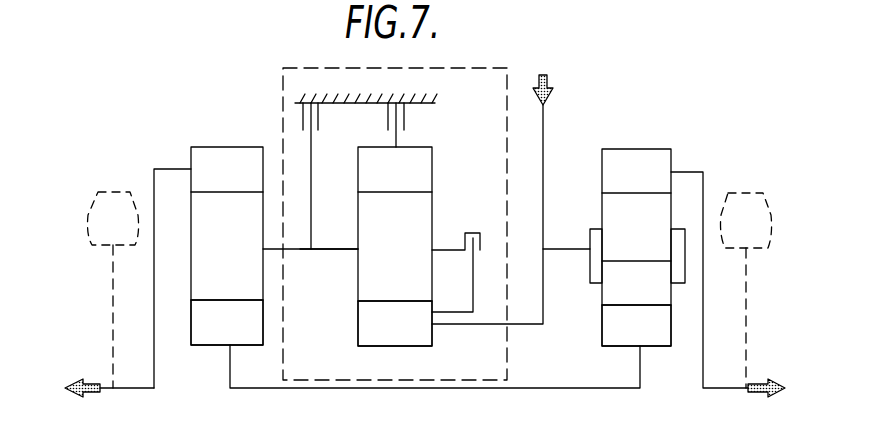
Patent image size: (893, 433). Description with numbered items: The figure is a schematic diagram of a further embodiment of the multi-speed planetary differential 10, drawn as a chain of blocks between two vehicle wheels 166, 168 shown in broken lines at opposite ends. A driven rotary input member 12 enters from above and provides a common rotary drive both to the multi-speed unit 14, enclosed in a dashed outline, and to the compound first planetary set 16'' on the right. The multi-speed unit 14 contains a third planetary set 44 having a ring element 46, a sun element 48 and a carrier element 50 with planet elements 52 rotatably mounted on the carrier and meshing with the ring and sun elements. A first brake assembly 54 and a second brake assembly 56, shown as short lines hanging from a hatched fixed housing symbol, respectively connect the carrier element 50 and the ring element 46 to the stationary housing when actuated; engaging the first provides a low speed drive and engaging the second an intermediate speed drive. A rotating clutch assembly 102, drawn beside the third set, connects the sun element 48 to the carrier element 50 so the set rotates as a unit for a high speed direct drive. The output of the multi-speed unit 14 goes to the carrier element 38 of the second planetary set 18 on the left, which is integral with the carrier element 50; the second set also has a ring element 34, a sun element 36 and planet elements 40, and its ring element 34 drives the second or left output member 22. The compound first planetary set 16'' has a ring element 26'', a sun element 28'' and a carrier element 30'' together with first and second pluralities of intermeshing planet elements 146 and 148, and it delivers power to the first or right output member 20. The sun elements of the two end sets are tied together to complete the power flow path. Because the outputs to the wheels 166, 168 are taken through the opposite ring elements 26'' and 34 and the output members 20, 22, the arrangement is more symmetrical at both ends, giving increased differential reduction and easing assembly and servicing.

The multi-speed planetary differential 10 is at (128, 100).
The driven rotary input member 12 is at (545, 120).
The multi-speed unit 14 is at (473, 67).
The compound first planetary set 16'' is at (619, 223).
The second planetary set 18 is at (227, 220).
The first output member 20 is at (722, 387).
The second output member 22 is at (105, 386).
The ring element 26'' is at (636, 177).
The sun element 28'' is at (636, 325).
The carrier element 30'' is at (617, 230).
The ring element 34 is at (237, 181).
The sun element 36 is at (237, 336).
The carrier element 38 is at (263, 247).
The planet elements 40 is at (237, 271).
The third planetary set 44 is at (361, 255).
The ring element 46 is at (408, 180).
The sun element 48 is at (408, 336).
The carrier element 50 is at (335, 249).
The planet elements 52 is at (408, 271).
The first brake assembly 54 is at (303, 118).
The second brake assembly 56 is at (405, 121).
The rotating clutch assembly 102 is at (472, 229).
The first plurality of planet elements 146 is at (656, 236).
The second plurality of planet elements 148 is at (656, 297).
The vehicle wheel 166 is at (756, 190).
The vehicle wheel 168 is at (103, 190).